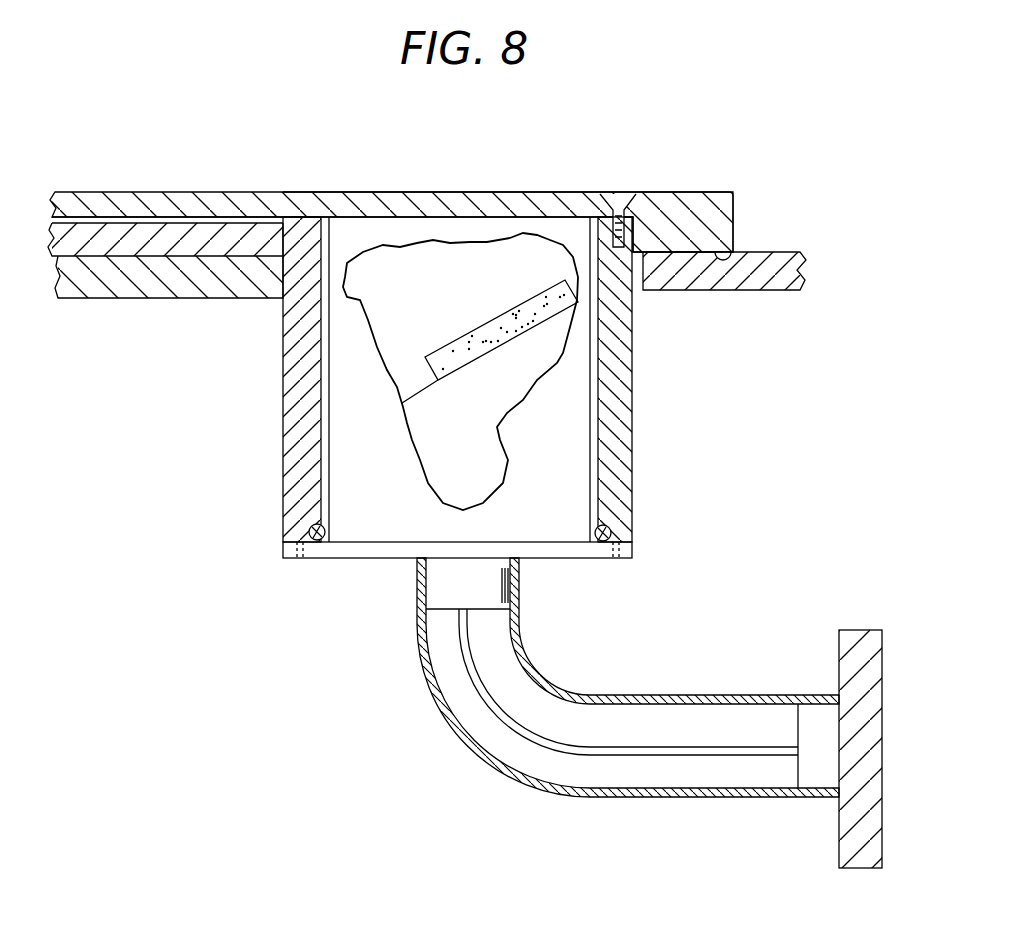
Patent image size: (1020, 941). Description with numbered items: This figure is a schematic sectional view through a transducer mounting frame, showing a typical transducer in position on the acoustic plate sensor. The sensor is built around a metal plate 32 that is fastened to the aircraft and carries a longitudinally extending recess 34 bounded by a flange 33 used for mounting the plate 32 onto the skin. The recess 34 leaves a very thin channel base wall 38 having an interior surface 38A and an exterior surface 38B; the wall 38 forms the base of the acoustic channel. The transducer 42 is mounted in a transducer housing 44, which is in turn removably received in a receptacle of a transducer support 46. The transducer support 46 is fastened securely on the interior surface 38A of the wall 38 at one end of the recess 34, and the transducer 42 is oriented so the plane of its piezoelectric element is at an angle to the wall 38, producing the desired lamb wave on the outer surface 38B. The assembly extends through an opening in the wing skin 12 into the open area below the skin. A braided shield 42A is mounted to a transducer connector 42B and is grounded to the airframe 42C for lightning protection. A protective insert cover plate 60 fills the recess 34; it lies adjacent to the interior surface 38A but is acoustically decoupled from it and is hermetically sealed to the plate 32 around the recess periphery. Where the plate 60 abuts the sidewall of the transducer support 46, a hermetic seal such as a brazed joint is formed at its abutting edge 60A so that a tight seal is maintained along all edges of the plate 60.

The wing skin 12 is at (157, 290).
The plate 32 is at (492, 192).
The flange 33 is at (725, 265).
The recess 34 is at (140, 222).
The channel base wall 38 is at (166, 238).
The interior surface 38A is at (103, 225).
The exterior surface 38B is at (128, 196).
The transducer 42 is at (520, 333).
The braided shield 42A is at (563, 687).
The transducer connector 42B is at (465, 588).
The airframe 42C is at (847, 758).
The transducer housing 44 is at (380, 505).
The transducer support 46 is at (630, 437).
The protective insert cover plate 60 is at (203, 248).
The abutting edge of plate 60A is at (302, 220).